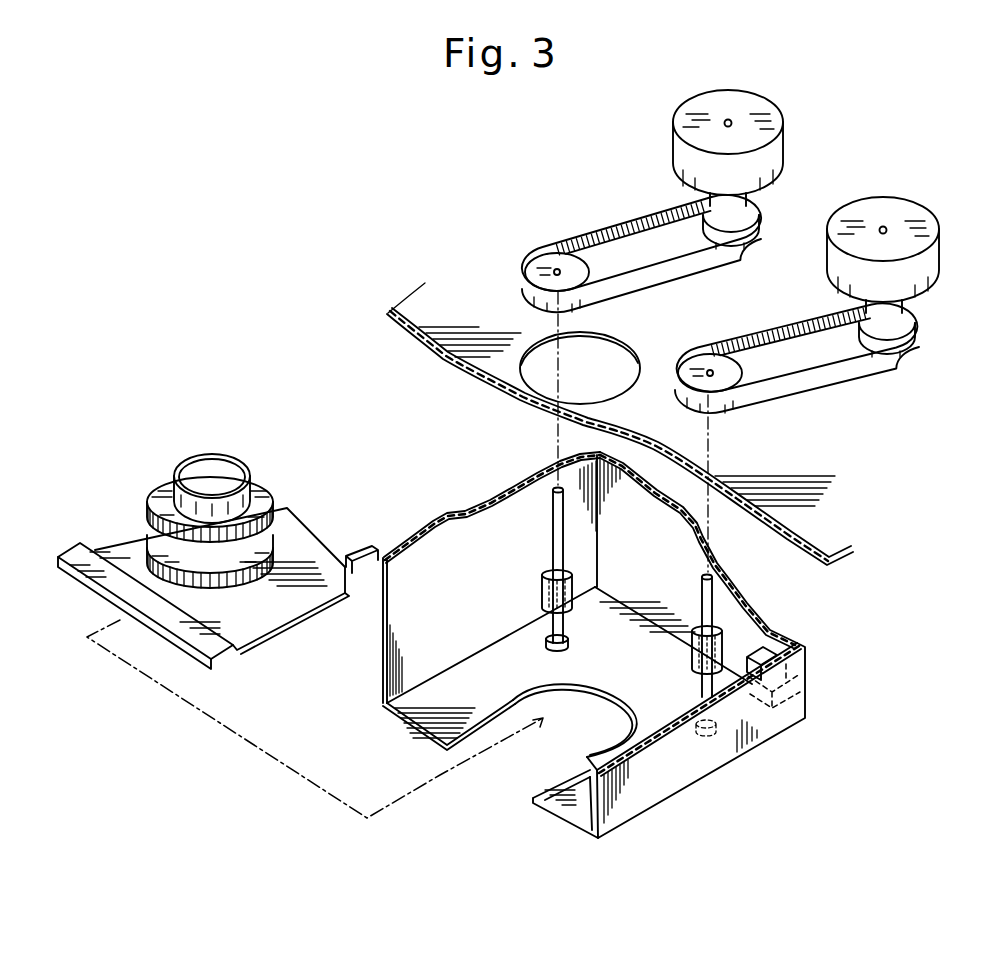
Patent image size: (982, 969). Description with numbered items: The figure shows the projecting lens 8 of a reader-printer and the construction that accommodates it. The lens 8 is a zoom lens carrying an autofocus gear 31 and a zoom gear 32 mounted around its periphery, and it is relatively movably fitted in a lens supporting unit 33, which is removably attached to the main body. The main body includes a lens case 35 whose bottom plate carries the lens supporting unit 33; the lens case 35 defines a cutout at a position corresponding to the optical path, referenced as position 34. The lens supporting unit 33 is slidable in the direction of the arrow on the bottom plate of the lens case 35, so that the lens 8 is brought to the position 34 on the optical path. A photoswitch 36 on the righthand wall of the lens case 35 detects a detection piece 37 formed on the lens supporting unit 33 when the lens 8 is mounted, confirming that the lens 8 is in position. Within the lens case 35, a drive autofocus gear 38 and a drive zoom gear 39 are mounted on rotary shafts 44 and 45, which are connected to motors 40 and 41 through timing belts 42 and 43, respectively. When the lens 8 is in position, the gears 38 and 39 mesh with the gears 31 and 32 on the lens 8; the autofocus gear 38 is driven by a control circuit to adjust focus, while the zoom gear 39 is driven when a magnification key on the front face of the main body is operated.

The projecting lens 8 is at (228, 474).
The autofocus gear 31 is at (284, 530).
The zoom gear 32 is at (272, 492).
The lens supporting unit 33 is at (273, 623).
The position corresponding to the optical path 34 is at (525, 777).
The lens case 35 is at (673, 783).
The photoswitch 36 is at (790, 632).
The detection piece 37 is at (370, 553).
The autofocus gear 38 is at (543, 590).
The zoom gear 39 is at (690, 648).
The motor 40 is at (776, 118).
The motor 41 is at (910, 213).
The timing belt 42 is at (608, 233).
The timing belt 43 is at (752, 342).
The rotary shaft 44 is at (565, 531).
The rotary shaft 45 is at (713, 603).